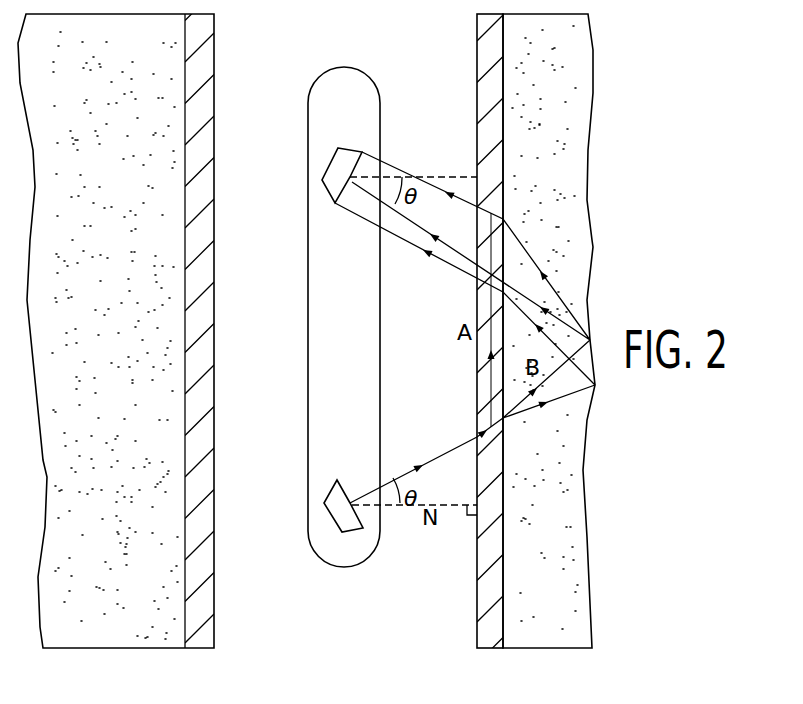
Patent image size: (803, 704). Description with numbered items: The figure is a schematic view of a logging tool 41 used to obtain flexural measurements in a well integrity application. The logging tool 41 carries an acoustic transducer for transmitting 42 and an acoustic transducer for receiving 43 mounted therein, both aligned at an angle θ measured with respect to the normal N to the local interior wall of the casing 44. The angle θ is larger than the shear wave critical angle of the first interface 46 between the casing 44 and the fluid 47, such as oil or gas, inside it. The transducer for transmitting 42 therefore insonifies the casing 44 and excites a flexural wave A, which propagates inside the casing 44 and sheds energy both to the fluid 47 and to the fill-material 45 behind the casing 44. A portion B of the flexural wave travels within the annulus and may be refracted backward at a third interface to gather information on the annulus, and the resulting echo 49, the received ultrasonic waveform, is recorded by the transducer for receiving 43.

The logging tool 41 is at (307, 317).
The acoustic transducer for transmitting 42 is at (338, 503).
The acoustic transducer for receiving 43 is at (335, 173).
The casing 44 is at (205, 224).
The fill-material 45 is at (550, 581).
The first interface 46 is at (467, 350).
The fluid 47 is at (432, 601).
The echo 49 is at (465, 327).